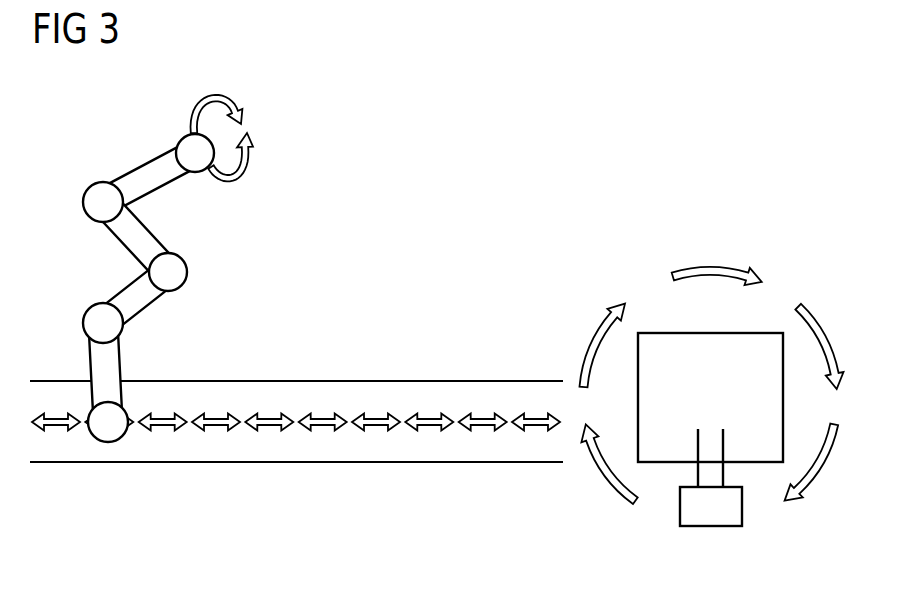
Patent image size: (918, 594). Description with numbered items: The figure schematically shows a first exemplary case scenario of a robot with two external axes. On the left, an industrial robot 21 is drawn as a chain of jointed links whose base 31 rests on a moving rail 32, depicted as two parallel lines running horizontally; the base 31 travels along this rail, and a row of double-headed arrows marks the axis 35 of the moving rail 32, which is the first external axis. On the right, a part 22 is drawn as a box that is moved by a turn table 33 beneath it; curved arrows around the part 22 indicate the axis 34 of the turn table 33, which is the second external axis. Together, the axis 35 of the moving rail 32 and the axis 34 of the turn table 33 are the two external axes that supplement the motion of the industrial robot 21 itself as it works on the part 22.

The industrial robot 21 is at (90, 158).
The part 22 is at (763, 452).
The base 31 is at (108, 437).
The moving rail 32 is at (497, 463).
The turn table 33 is at (705, 467).
The axis of the turn table 34 is at (817, 325).
The axis of the moving rail 35 is at (429, 420).